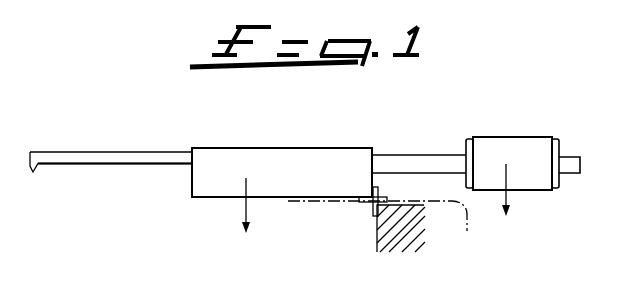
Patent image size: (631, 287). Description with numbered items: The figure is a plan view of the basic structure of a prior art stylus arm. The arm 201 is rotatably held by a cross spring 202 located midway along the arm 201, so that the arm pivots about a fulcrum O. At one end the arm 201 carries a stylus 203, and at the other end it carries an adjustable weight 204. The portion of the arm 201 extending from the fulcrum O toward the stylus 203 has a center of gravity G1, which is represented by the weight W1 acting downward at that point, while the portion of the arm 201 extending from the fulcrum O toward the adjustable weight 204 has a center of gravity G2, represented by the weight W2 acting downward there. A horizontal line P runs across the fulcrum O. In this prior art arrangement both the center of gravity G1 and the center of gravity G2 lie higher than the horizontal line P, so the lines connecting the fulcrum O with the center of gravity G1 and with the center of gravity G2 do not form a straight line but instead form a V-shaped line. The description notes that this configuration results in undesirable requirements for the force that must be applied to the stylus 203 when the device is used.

The arm 201 is at (295, 163).
The cross spring 202 is at (382, 192).
The stylus 203 is at (33, 172).
The adjustable weight 204 is at (543, 150).
The center of gravity on the stylus side G1 is at (246, 178).
The center of gravity on the weight side G2 is at (506, 164).
The weight on the stylus side W1 is at (247, 218).
The weight on the weight side W2 is at (512, 202).
The fulcrum O is at (372, 207).
The horizontal line P is at (463, 241).